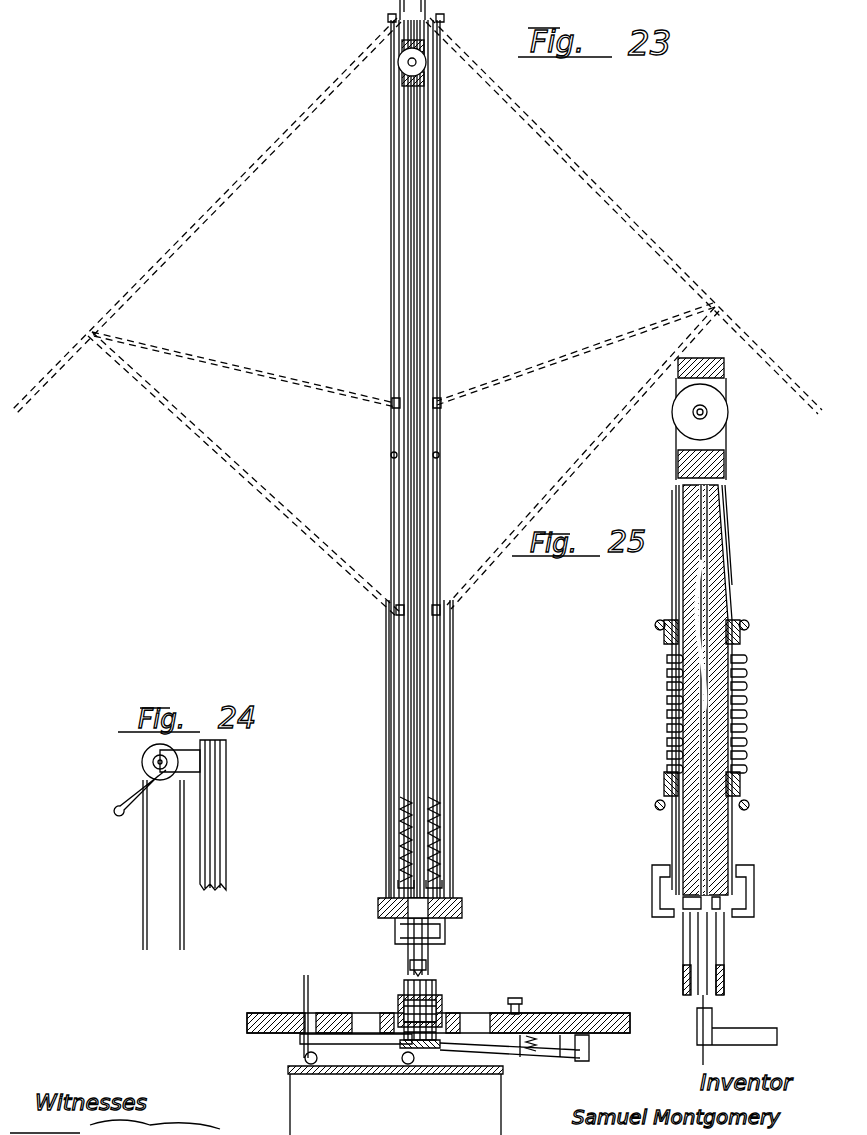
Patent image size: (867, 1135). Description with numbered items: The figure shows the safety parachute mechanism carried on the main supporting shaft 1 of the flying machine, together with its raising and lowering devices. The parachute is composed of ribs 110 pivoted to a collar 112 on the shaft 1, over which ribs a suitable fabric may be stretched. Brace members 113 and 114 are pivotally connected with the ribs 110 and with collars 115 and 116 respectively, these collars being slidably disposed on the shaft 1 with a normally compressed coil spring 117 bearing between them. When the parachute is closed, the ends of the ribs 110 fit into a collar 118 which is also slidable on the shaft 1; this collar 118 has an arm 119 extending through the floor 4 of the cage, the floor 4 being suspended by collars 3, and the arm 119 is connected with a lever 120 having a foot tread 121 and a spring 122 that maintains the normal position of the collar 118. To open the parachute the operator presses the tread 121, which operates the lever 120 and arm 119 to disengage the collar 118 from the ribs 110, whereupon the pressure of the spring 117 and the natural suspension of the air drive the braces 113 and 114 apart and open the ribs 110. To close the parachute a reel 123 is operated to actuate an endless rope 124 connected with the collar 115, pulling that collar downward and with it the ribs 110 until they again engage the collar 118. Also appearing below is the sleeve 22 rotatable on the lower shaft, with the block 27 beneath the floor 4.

In FIG. 23, the main supporting shaft 1 is at (430, 350).
In FIG. 25, the main supporting shaft 1 is at (732, 838).
In FIG. 23, the collars 3 is at (404, 1008).
In FIG. 23, the floor 4 is at (555, 1016).
In FIG. 23, the sleeve 22 is at (434, 996).
In FIG. 23, the keel block 27 is at (358, 1076).
In FIG. 23, the ribs 110 is at (212, 212).
In FIG. 23, the collar 112 is at (444, 16).
In FIG. 23, the brace member 113 is at (258, 360).
In FIG. 23, the brace member 114 is at (252, 474).
In FIG. 23, the collar 115 is at (446, 790).
In FIG. 25, the collar 115 is at (748, 620).
In FIG. 23, the collar 116 is at (400, 880).
In FIG. 25, the collar 116 is at (748, 770).
In FIG. 23, the coil spring 117 is at (436, 854).
In FIG. 25, the coil spring 117 is at (668, 716).
In FIG. 23, the collar 118 is at (462, 904).
In FIG. 23, the arm 119 is at (430, 974).
In FIG. 25, the arm 119 is at (736, 964).
In FIG. 23, the lever 120 is at (553, 1058).
In FIG. 25, the lever 120 is at (750, 1034).
In FIG. 23, the foot tread 121 is at (522, 1001).
In FIG. 23, the spring 122 is at (532, 1048).
In FIG. 24, the reel 123 is at (142, 760).
In FIG. 23, the endless rope 124 is at (310, 1002).
In FIG. 24, the endless rope 124 is at (143, 884).
In FIG. 25, the endless rope 124 is at (676, 568).